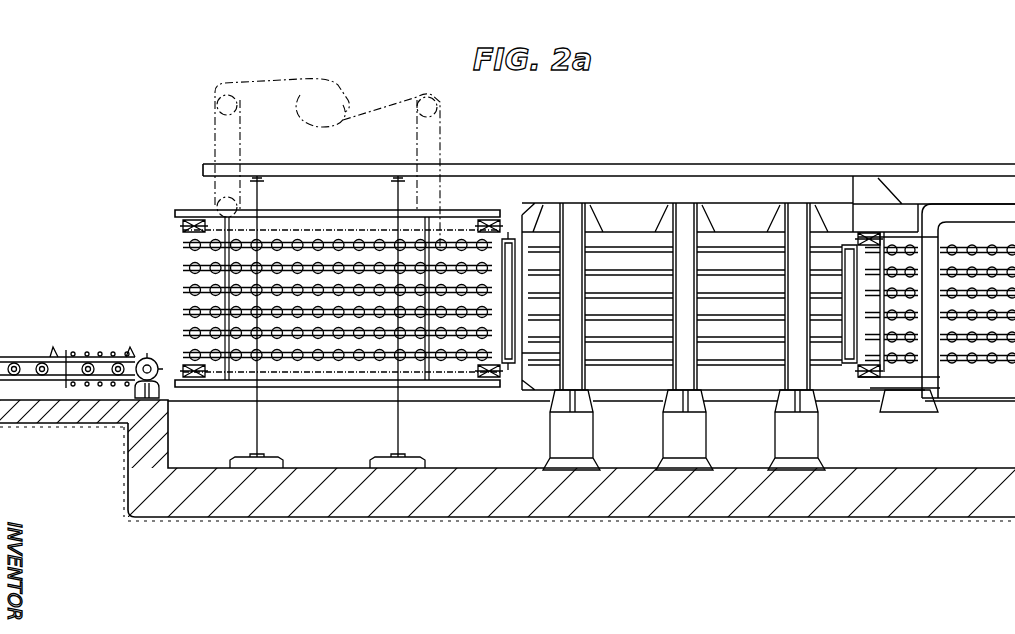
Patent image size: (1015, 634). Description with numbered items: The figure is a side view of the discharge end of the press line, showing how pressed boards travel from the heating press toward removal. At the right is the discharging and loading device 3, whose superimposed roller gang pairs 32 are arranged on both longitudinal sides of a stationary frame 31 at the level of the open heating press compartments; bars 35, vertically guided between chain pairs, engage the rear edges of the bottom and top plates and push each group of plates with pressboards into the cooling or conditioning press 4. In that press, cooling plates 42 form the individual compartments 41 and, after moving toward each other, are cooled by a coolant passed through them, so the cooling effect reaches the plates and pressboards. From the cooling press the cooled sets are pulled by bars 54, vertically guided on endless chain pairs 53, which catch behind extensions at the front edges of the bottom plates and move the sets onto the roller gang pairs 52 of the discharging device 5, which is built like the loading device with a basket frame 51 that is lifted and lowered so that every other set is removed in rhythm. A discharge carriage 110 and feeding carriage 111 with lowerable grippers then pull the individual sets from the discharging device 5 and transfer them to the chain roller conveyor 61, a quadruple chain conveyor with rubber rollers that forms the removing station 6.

The discharging and loading device 3 is at (951, 125).
The stationary frame 31 is at (945, 215).
The roller gang pairs 32 is at (965, 312).
The bars 35 is at (850, 372).
The cooling or conditioning press 4 is at (679, 123).
The compartments 41 is at (735, 320).
The cooling plates 42 is at (617, 340).
The discharging device 5 is at (333, 44).
The roller frame 51 is at (284, 212).
The roller gang pairs 52 is at (300, 312).
The endless chain pairs 53 is at (361, 242).
The bars 54 is at (508, 239).
The removing station 6 is at (101, 294).
The chain roller conveyor 61 is at (110, 354).
The discharge carriage 110 is at (31, 368).
The feeding carriage 111 is at (53, 357).